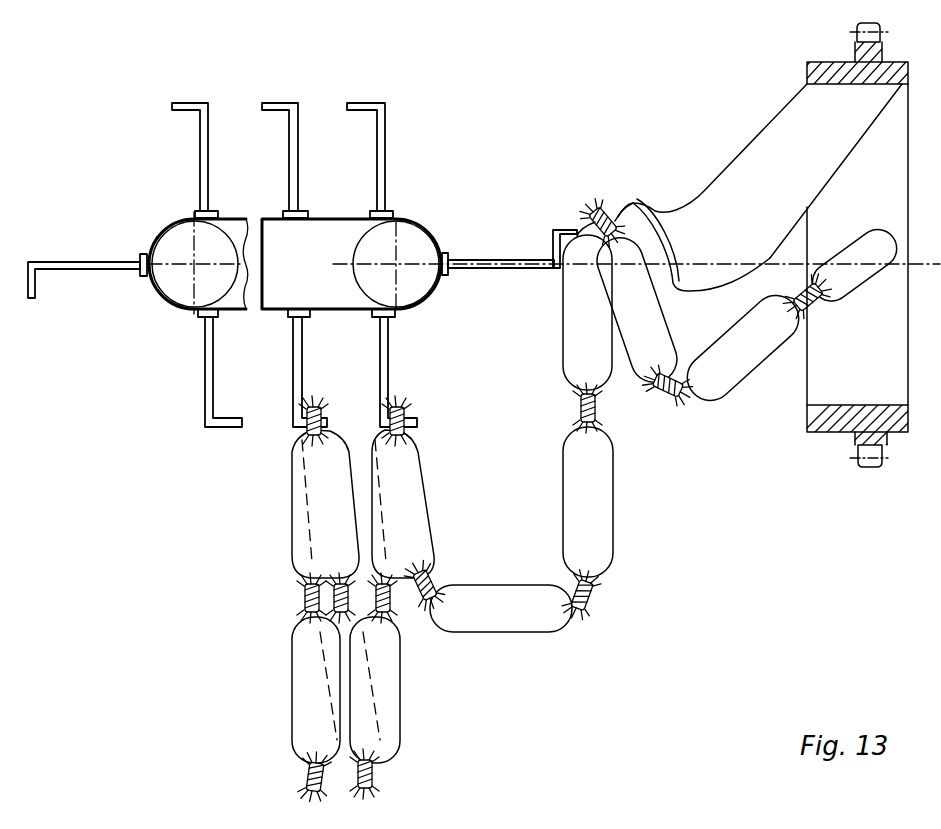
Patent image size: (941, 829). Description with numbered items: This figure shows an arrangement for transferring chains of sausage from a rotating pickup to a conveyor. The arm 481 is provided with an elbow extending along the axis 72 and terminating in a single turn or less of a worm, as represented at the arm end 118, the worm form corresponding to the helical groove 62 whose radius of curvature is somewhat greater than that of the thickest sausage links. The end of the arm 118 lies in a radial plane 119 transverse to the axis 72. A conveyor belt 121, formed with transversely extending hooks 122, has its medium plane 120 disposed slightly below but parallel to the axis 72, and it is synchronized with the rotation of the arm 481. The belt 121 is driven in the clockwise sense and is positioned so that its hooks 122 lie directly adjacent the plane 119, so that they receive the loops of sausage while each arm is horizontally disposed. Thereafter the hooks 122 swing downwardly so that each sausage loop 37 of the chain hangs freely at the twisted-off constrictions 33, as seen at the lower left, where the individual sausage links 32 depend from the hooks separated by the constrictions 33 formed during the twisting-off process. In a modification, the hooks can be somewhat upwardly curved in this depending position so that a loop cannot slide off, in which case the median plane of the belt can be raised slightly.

The sausage link 32 is at (462, 630).
The constriction 33 is at (338, 606).
The sausage loop 37 is at (322, 791).
The helical groove 62 is at (668, 211).
The axis 72 is at (783, 247).
The arm end 118 is at (628, 189).
The radial plane 119 is at (560, 275).
The medium plane 120 is at (347, 264).
The conveyor belt 121 is at (422, 207).
The hooks 122 is at (553, 243).
The arm 481 is at (762, 153).